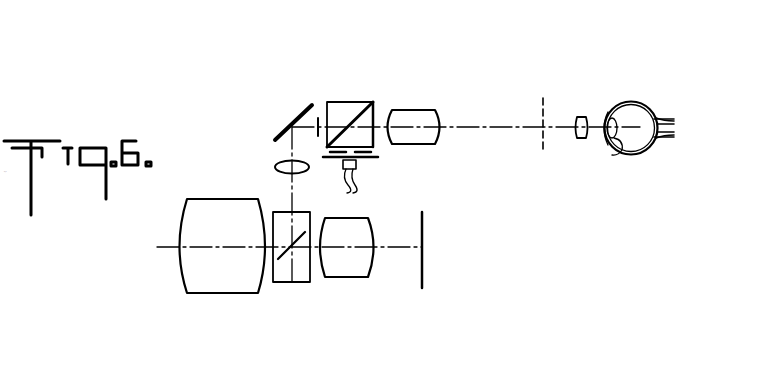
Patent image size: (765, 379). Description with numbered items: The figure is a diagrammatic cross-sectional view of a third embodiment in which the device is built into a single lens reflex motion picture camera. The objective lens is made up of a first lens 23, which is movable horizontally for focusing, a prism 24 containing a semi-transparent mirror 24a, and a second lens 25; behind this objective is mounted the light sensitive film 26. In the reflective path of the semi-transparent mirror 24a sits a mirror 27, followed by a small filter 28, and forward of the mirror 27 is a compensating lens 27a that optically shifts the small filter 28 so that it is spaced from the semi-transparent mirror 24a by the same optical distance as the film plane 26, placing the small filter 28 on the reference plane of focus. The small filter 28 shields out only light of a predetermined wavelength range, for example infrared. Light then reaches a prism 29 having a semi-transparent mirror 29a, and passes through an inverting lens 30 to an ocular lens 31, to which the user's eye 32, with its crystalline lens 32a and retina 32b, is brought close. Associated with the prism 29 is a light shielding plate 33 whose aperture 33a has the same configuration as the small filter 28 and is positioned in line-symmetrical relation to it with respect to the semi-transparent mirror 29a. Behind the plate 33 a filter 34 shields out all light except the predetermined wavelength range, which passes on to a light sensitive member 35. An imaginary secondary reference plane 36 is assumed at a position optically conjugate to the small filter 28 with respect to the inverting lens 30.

The first lens 23 is at (193, 199).
The prism 24 is at (296, 283).
The semi-transparent mirror 24a is at (287, 272).
The second lens 25 is at (343, 278).
The light sensitive film 26 is at (422, 213).
The mirror 27 is at (302, 106).
The compensating lens 27a is at (276, 167).
The small filter 28 is at (316, 118).
The prism 29 is at (348, 102).
The semi-transparent mirror 29a is at (353, 130).
The aperture 33a is at (374, 103).
The inverting lens 30 is at (442, 113).
The ocular lens 31 is at (582, 117).
The eye 32 is at (635, 102).
The crystalline lens 32a is at (617, 150).
The retina 32b is at (664, 118).
The light shielding plate 33 is at (376, 151).
The filter 34 is at (378, 158).
The light sensitive member 35 is at (354, 186).
The imaginary secondary reference plane 36 is at (543, 98).